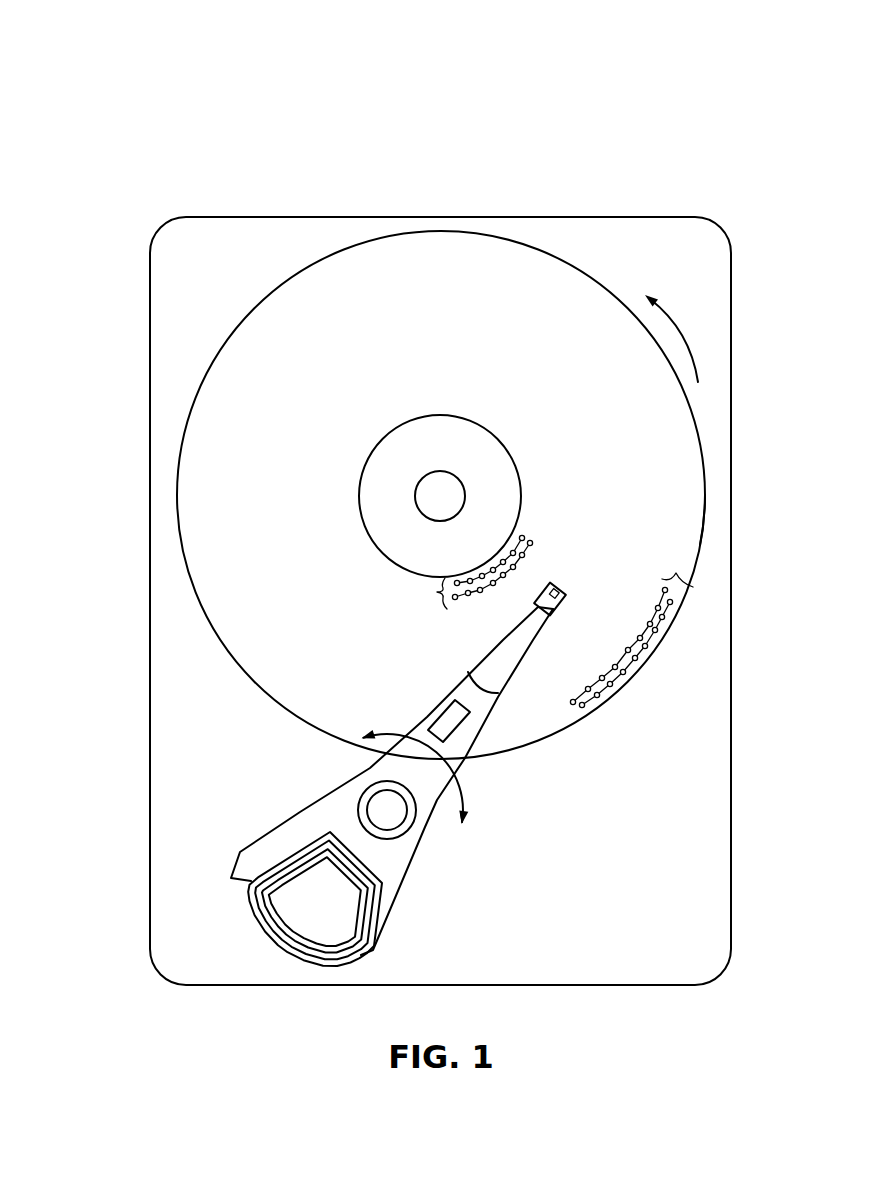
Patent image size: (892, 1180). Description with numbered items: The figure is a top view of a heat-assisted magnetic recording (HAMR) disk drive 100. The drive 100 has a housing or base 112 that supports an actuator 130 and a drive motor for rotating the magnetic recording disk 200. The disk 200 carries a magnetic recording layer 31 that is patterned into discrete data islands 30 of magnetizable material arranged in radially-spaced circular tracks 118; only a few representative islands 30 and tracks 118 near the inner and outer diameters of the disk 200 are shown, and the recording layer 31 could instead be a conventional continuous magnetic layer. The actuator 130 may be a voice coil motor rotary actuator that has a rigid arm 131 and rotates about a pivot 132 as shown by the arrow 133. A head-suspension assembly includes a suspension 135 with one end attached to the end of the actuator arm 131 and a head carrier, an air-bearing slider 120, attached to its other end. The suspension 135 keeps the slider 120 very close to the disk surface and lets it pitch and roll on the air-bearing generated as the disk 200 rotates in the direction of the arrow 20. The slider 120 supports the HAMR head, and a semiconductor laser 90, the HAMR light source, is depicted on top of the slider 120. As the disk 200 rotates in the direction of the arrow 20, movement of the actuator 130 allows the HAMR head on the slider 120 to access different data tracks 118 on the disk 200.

The HAMR disk drive 100 is at (128, 96).
The housing or base 112 is at (614, 216).
The disk 200 is at (287, 280).
The arrow 20 is at (685, 341).
The magnetic recording layer 31 is at (690, 458).
The circular tracks 118 is at (437, 592).
The data islands 30 is at (462, 608).
The semiconductor laser 90 is at (563, 592).
The air-bearing slider 120 is at (560, 603).
The suspension 135 is at (487, 662).
The rigid arm 131 is at (423, 715).
The arrow 133 is at (463, 792).
The pivot 132 is at (378, 805).
The actuator 130 is at (243, 866).